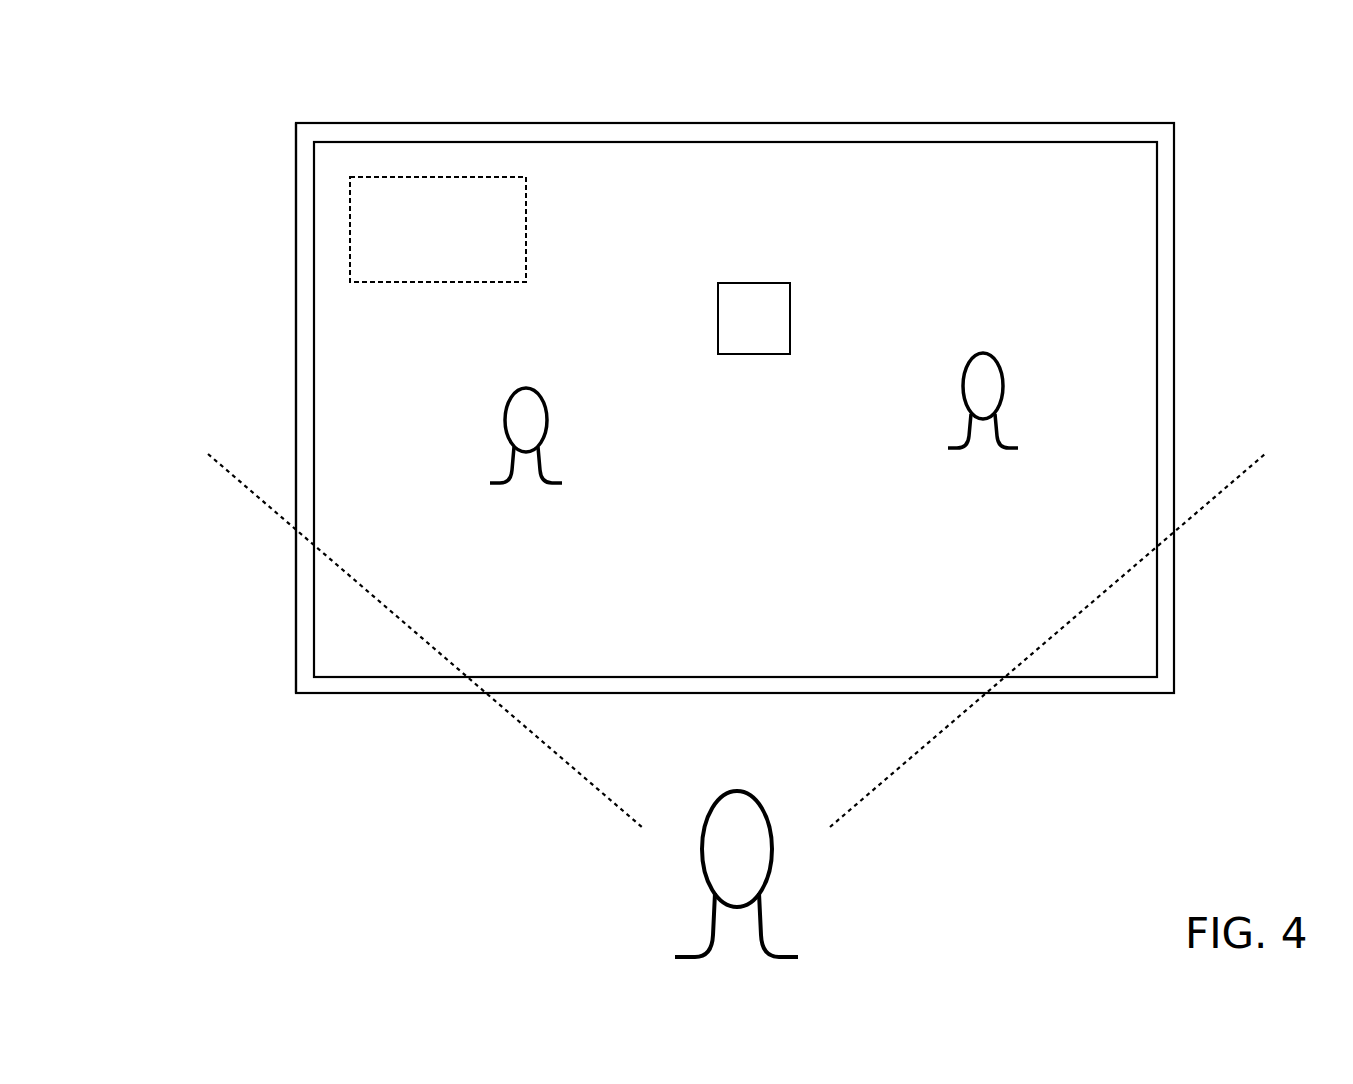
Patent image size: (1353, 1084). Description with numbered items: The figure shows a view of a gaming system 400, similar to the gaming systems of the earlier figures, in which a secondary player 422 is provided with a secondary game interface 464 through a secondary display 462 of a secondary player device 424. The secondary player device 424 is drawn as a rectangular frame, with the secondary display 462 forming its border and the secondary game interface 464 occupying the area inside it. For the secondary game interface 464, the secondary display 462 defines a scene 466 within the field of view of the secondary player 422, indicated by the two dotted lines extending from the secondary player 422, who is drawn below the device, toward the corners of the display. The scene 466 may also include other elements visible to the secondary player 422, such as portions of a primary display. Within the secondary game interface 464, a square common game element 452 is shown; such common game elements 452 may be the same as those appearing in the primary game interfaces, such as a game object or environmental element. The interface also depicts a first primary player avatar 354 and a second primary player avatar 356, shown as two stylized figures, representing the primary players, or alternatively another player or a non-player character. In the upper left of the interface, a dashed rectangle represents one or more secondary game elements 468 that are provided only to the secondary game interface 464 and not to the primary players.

The gaming system 400 is at (210, 83).
The secondary player device 424 is at (740, 117).
The secondary display 462 is at (313, 297).
The secondary game interface 464 is at (322, 350).
The secondary game elements 468 is at (439, 165).
The common game elements 452 is at (798, 315).
The second primary player avatar 356 is at (500, 432).
The first primary player avatar 354 is at (962, 464).
The scene 466 is at (533, 743).
The secondary player 422 is at (697, 887).